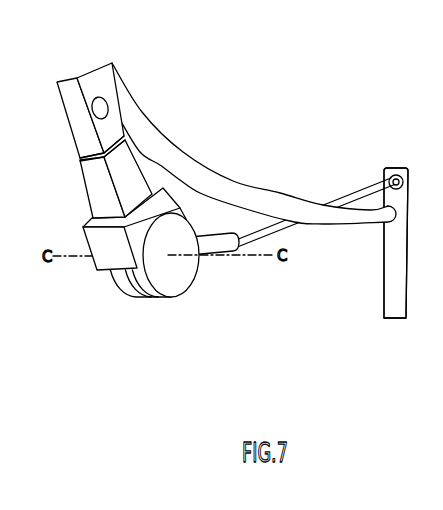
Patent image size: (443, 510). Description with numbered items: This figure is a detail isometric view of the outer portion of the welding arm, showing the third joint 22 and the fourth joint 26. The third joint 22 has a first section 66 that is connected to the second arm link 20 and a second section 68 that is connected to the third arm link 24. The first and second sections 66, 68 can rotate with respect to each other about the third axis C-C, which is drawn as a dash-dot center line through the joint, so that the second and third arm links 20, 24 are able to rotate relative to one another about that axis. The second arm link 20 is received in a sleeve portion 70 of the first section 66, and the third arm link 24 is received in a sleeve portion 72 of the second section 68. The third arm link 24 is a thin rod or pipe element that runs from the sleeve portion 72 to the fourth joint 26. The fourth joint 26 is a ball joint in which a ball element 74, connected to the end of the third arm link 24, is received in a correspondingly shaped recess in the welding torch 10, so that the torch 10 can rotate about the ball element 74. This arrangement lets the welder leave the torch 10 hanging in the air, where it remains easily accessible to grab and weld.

The welding torch 10 is at (388, 256).
The second arm link 20 is at (90, 84).
The third joint 22 is at (132, 316).
The third arm link 24 is at (345, 198).
The fourth joint 26 is at (399, 158).
The first section 66 is at (103, 271).
The second section 68 is at (209, 259).
The sleeve portion 70 is at (127, 170).
The sleeve portion 72 is at (210, 236).
The ball element 74 is at (389, 178).